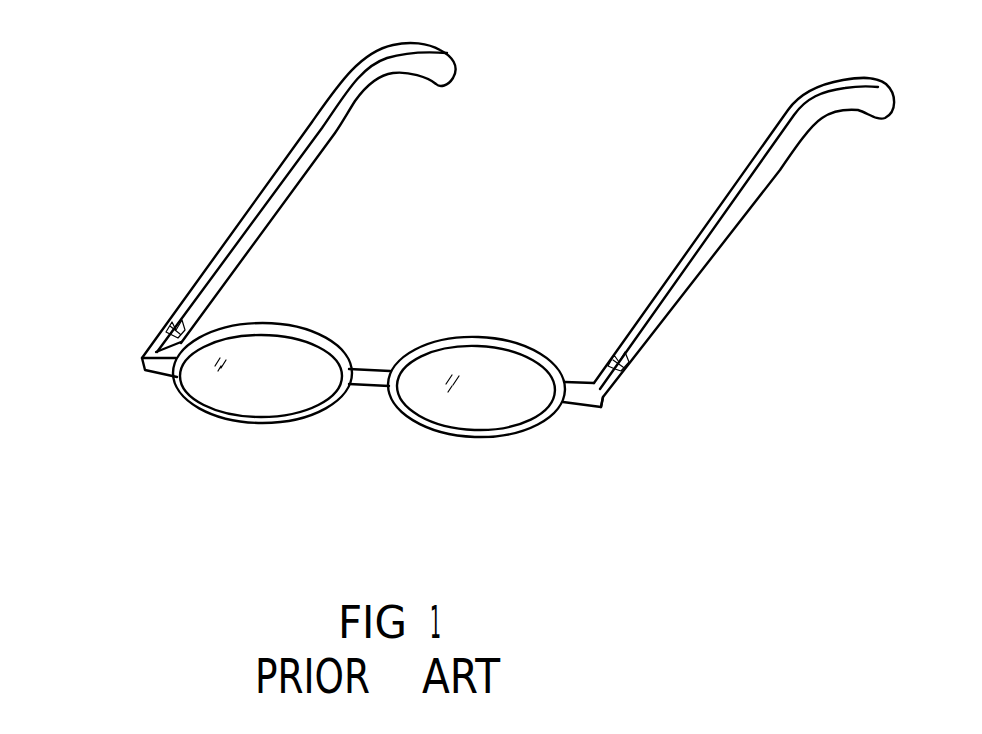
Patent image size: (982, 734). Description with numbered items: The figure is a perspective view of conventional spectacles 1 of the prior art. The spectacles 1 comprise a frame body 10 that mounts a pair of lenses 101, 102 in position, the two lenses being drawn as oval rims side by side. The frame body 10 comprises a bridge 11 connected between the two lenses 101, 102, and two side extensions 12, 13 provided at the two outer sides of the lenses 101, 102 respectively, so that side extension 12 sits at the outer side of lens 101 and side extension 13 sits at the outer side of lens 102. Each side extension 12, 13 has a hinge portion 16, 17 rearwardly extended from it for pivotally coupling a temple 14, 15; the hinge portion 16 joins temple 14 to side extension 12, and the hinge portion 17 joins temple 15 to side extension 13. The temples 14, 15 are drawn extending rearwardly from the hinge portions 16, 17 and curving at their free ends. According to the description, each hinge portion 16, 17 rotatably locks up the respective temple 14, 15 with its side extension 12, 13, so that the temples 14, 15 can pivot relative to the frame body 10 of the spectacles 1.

The spectacles 1 is at (454, 505).
The frame body 10 is at (325, 410).
The lens 101 is at (510, 415).
The lens 102 is at (238, 402).
The bridge 11 is at (368, 371).
The side extension 12 is at (590, 398).
The side extension 13 is at (142, 364).
The temple 14 is at (722, 243).
The temple 15 is at (258, 197).
The hinge portion 16 is at (609, 356).
The hinge portion 17 is at (162, 323).